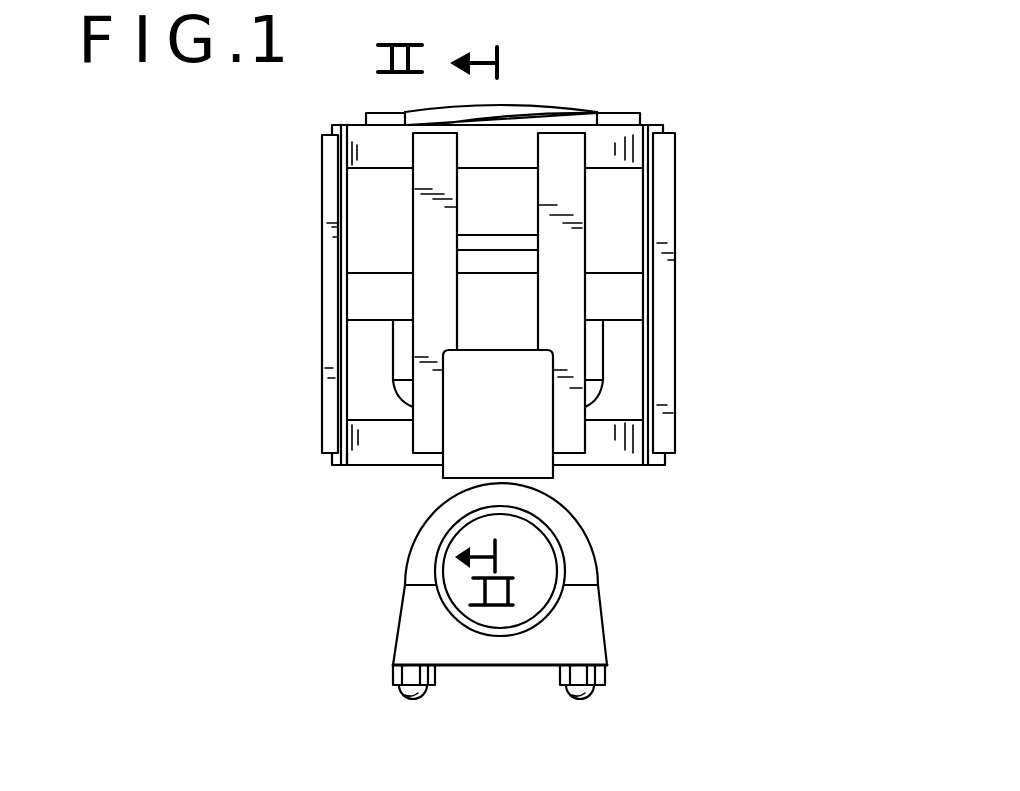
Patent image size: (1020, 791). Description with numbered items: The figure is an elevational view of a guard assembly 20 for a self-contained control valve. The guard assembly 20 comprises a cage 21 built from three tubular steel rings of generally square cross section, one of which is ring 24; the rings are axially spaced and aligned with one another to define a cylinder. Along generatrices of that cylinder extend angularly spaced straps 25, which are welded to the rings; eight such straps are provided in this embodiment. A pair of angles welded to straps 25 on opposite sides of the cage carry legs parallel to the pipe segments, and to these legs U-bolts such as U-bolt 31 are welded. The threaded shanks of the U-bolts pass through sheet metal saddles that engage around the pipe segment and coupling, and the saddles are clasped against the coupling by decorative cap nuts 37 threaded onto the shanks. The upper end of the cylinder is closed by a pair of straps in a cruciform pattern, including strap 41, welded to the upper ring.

The guard assembly 20 is at (486, 401).
The cage 21 is at (688, 145).
The tubular steel ring 24 is at (383, 440).
The straps 25 is at (667, 333).
The U-bolt 31 is at (567, 526).
The cap nut 37 is at (413, 700).
The strap 41 is at (625, 112).